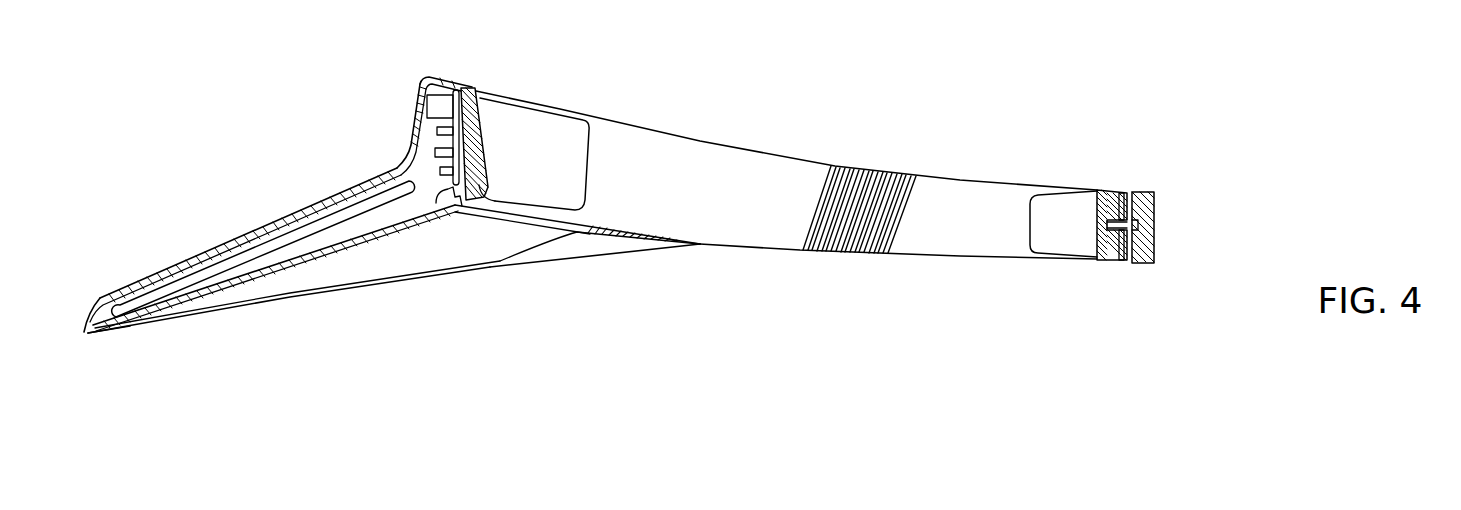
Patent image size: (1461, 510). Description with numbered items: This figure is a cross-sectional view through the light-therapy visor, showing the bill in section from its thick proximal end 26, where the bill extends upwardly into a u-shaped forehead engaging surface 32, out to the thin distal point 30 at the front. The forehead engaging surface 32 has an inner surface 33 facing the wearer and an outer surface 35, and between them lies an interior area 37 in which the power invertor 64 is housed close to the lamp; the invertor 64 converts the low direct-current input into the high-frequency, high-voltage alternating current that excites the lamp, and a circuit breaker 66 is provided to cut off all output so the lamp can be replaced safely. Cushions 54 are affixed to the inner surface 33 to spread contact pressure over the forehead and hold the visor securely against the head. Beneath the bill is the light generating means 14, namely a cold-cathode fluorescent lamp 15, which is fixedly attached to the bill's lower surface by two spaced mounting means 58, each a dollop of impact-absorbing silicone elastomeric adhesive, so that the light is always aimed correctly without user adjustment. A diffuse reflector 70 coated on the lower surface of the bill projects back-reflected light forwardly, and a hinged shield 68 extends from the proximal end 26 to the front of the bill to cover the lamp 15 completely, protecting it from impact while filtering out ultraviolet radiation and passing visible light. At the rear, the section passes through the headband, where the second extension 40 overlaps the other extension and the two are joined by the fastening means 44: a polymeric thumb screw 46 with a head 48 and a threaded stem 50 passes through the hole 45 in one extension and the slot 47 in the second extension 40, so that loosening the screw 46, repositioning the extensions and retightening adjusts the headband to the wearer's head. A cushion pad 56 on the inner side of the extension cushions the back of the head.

The light generating means 14 is at (300, 230).
The cold-cathode fluorescent lamp 15 is at (320, 220).
The proximal end 26 is at (398, 170).
The distal point 30 is at (84, 336).
The forehead engaging surface 32 is at (488, 170).
The inner surface 33 is at (479, 98).
The outer surface 35 is at (421, 82).
The interior area 37 is at (421, 157).
The second extension 40 is at (773, 227).
The fastening means 44 is at (1143, 210).
The hole 45 is at (1113, 193).
The thumb screw 46 is at (1150, 200).
The slot 47 is at (1122, 190).
The head 48 is at (1150, 223).
The threaded stem 50 is at (1113, 237).
The cushions 54 is at (570, 137).
The cushion pad 56 is at (1043, 210).
The mounting means 58 is at (149, 289).
The power invertor 64 is at (462, 88).
The circuit breaker 66 is at (450, 193).
The shield 68 is at (247, 272).
The diffuse reflector 70 is at (443, 262).